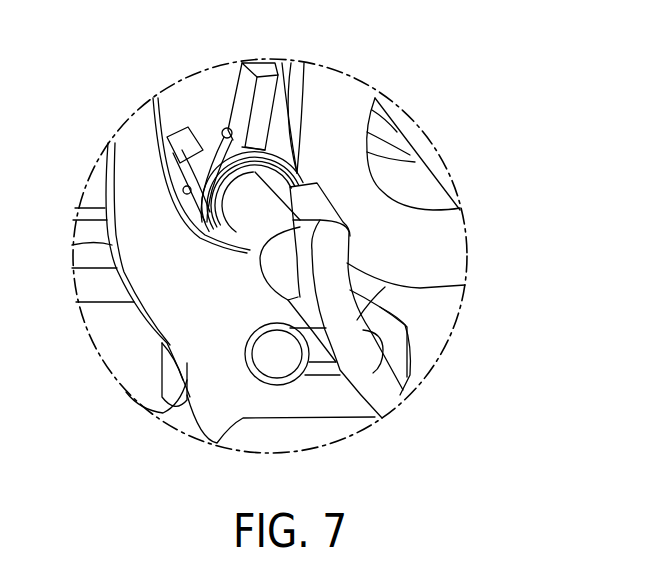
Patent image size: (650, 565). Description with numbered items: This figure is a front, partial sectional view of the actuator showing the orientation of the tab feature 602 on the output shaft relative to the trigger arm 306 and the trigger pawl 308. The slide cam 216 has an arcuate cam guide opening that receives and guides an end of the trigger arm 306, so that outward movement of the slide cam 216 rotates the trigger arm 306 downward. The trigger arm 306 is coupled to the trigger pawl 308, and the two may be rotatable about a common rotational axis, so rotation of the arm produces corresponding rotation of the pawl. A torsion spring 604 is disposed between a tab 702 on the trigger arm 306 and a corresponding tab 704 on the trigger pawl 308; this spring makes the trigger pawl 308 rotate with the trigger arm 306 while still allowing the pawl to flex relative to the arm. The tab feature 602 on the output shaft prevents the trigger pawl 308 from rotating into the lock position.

The slide cam 216 is at (200, 410).
The trigger arm 306 is at (197, 95).
The trigger pawl 308 is at (247, 253).
The tab feature 602 is at (382, 397).
The torsion spring 604 is at (198, 193).
The tab 702 is at (263, 78).
The tab 704 is at (172, 150).